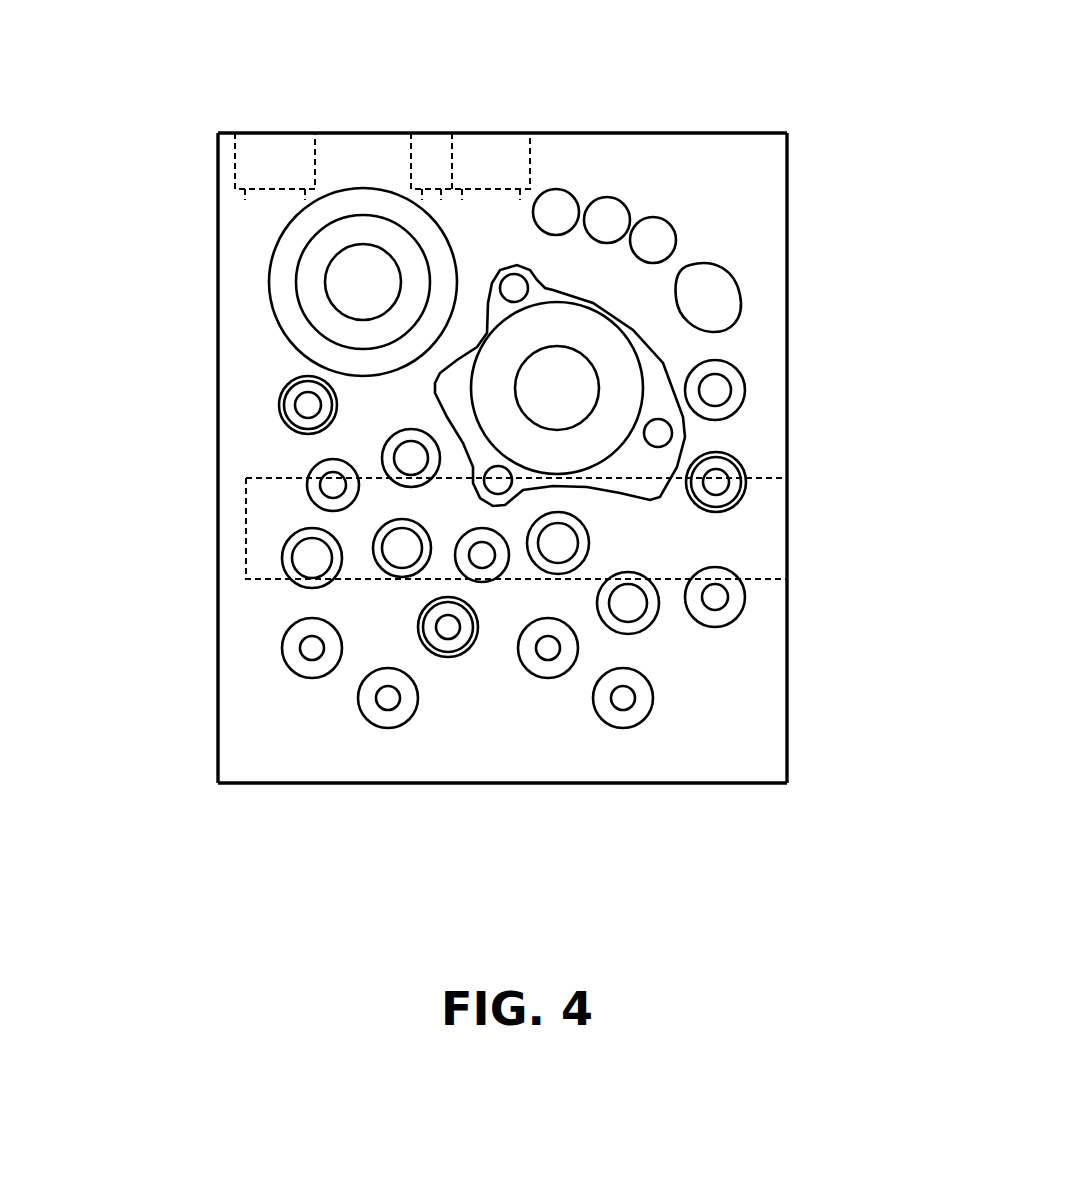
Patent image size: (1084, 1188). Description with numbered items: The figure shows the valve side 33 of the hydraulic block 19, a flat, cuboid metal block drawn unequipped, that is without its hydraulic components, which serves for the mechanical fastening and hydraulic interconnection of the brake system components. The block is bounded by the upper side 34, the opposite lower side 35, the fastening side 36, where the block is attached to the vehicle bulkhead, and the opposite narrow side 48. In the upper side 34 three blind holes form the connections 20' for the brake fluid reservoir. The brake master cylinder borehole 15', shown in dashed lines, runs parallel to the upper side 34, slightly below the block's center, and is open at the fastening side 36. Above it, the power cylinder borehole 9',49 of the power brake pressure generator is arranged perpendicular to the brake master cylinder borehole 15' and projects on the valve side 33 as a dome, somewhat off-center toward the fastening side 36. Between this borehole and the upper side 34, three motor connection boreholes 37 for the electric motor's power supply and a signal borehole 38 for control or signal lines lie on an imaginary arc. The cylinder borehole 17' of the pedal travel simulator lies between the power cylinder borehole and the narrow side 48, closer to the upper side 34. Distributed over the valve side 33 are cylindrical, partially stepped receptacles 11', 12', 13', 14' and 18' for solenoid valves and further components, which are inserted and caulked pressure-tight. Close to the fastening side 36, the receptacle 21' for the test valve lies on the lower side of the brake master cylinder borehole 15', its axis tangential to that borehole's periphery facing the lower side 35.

The hydraulic block 19 is at (196, 100).
The connections for the brake fluid reservoir 20' is at (382, 119).
The valve side 33 is at (747, 206).
The upper side 34 is at (718, 121).
The lower side 35 is at (503, 795).
The fastening side 36 is at (798, 212).
The narrow side 48 is at (208, 348).
The motor connection boreholes 37 is at (653, 230).
The signal borehole 38 is at (712, 292).
The cylinder borehole of the pedal travel simulator 17' is at (306, 282).
The power cylinder borehole and dome 9',49 is at (657, 385).
The receptacle for solenoid valve 18' is at (242, 405).
The receptacle for component 11' is at (516, 423).
The receptacle for solenoid valve 12' is at (650, 584).
The receptacle for solenoid valve 13' is at (467, 688).
The receptacle for solenoid valve 14' is at (485, 577).
The brake master cylinder borehole 15' is at (564, 528).
The receptacle for the test valve 21' is at (785, 603).